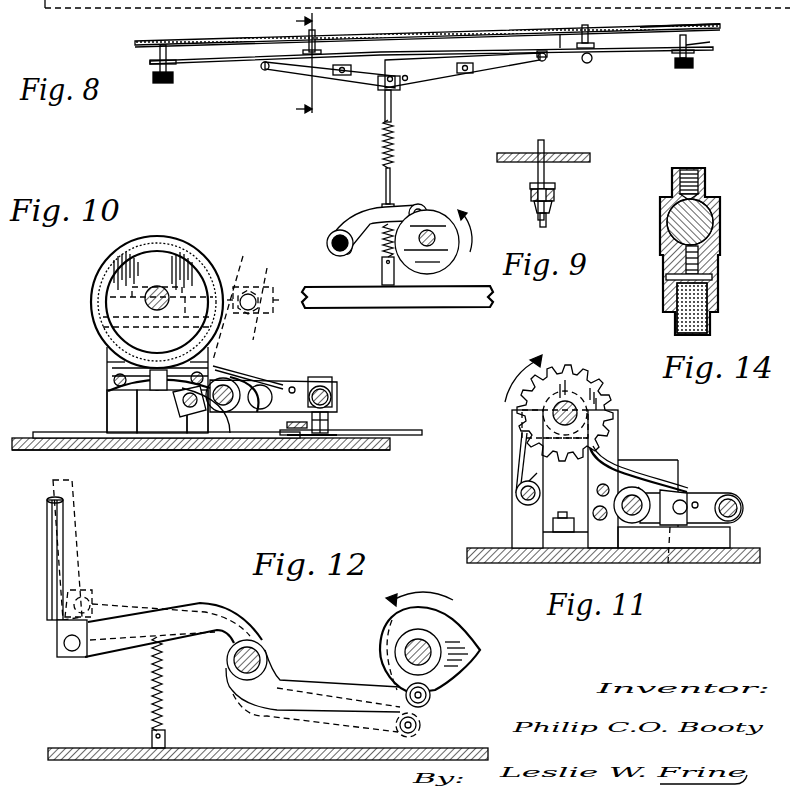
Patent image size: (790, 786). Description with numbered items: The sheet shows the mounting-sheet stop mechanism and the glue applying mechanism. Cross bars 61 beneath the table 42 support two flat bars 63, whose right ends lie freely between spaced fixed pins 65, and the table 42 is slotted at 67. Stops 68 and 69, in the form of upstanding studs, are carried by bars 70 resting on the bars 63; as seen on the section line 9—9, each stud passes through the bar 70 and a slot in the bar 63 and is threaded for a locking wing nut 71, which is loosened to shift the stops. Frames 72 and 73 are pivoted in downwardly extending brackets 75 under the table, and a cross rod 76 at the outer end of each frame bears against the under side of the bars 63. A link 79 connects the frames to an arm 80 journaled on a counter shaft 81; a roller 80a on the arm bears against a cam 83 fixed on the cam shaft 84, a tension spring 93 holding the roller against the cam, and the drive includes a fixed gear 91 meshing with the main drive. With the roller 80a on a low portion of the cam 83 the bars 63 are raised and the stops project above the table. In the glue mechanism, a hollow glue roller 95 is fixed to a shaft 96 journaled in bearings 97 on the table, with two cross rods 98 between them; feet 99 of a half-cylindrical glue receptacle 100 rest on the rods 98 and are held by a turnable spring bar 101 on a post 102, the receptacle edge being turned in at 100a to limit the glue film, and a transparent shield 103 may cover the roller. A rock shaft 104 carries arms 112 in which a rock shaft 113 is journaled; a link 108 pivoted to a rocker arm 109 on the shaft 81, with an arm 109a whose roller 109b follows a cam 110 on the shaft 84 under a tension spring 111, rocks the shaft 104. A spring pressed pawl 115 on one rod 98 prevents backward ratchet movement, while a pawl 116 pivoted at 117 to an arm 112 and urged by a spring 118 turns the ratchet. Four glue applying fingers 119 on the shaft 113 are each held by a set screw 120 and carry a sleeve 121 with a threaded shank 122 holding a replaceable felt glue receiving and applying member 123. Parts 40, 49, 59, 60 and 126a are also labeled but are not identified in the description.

In FIG. 8, the section line 9 is at (311, 63).
In FIG. 8, the base 40 is at (452, 308).
In FIG. 12, the base 40 is at (262, 760).
In FIG. 8, the table 42 is at (250, 40).
In FIG. 9, the table 42 is at (578, 153).
In FIG. 10, the table 42 is at (150, 450).
In FIG. 11, the table 42 is at (740, 563).
In FIG. 10, the plate edge 49 is at (14, 450).
In FIG. 10, the plate 59 is at (32, 434).
In FIG. 10, the plate 60 is at (172, 450).
In FIG. 8, the cross bars 61 is at (163, 84).
In FIG. 8, the flat bars 63 is at (622, 51).
In FIG. 9, the flat bars 63 is at (556, 195).
In FIG. 8, the spaced fixed pins 65 is at (690, 46).
In FIG. 8, the table slot 67 is at (668, 26).
In FIG. 8, the stops 68 is at (308, 32).
In FIG. 9, the stops 68 is at (536, 142).
In FIG. 8, the stops 69 is at (590, 28).
In FIG. 8, the bars 70 is at (560, 34).
In FIG. 9, the bars 70 is at (530, 186).
In FIG. 9, the locking wing nut 71 is at (553, 206).
In FIG. 8, the frame 72 is at (296, 70).
In FIG. 8, the frame 73 is at (507, 64).
In FIG. 8, the brackets 75 is at (457, 70).
In FIG. 8, the cross rod 76 is at (262, 70).
In FIG. 8, the link 79 is at (384, 106).
In FIG. 8, the arm 80 is at (362, 210).
In FIG. 8, the roller 80a is at (424, 205).
In FIG. 8, the counter shaft 81 is at (333, 250).
In FIG. 12, the counter shaft 81 is at (268, 654).
In FIG. 8, the cam 83 is at (444, 218).
In FIG. 8, the cam shaft 84 is at (433, 244).
In FIG. 12, the cam shaft 84 is at (426, 646).
In FIG. 8, the fixed gear 91 is at (382, 262).
In FIG. 8, the tension spring 93 is at (383, 140).
In FIG. 10, the glue roller 95 is at (190, 258).
In FIG. 10, the shaft 96 is at (160, 286).
In FIG. 11, the shaft 96 is at (574, 404).
In FIG. 10, the bearings 97 is at (106, 350).
In FIG. 11, the bearings 97 is at (520, 532).
In FIG. 10, the cross rods 98 is at (230, 365).
In FIG. 11, the cross rods 98 is at (598, 490).
In FIG. 10, the feet 99 is at (124, 362).
In FIG. 10, the glue receptacle 100 is at (103, 325).
In FIG. 11, the glue receptacle 100 is at (632, 524).
In FIG. 10, the turned-in edge 100a is at (100, 300).
In FIG. 10, the spring bar 101 is at (137, 401).
In FIG. 10, the post 102 is at (160, 403).
In FIG. 10, the shield 103 is at (96, 268).
In FIG. 10, the rock shaft 104 is at (201, 409).
In FIG. 12, the link 108 is at (64, 548).
In FIG. 12, the rocker arm 109 is at (132, 628).
In FIG. 12, the arm 109a is at (332, 684).
In FIG. 12, the roller 109b is at (420, 714).
In FIG. 11, the cam 110 is at (572, 366).
In FIG. 12, the cam 110 is at (470, 655).
In FIG. 12, the tension spring 111 is at (150, 702).
In FIG. 10, the arms 112 is at (275, 326).
In FIG. 11, the arms 112 is at (707, 493).
In FIG. 14, the rock shaft 113 is at (730, 214).
In FIG. 10, the rock shaft 113 is at (353, 386).
In FIG. 11, the rock shaft 113 is at (742, 502).
In FIG. 11, the spring pressed pawl 115 is at (512, 448).
In FIG. 11, the pawl 116 is at (690, 470).
In FIG. 11, the pivot 117 is at (690, 548).
In FIG. 11, the spring 118 is at (668, 563).
In FIG. 14, the glue applying fingers 119 is at (730, 258).
In FIG. 10, the glue applying fingers 119 is at (358, 408).
In FIG. 14, the set screw 120 is at (690, 168).
In FIG. 14, the sleeve 121 is at (732, 298).
In FIG. 14, the shank 122 is at (662, 268).
In FIG. 14, the glue receiving and applying member 123 is at (676, 326).
In FIG. 10, the glue receiving and applying member 123 is at (322, 442).
In FIG. 10, the strip 126a is at (290, 430).